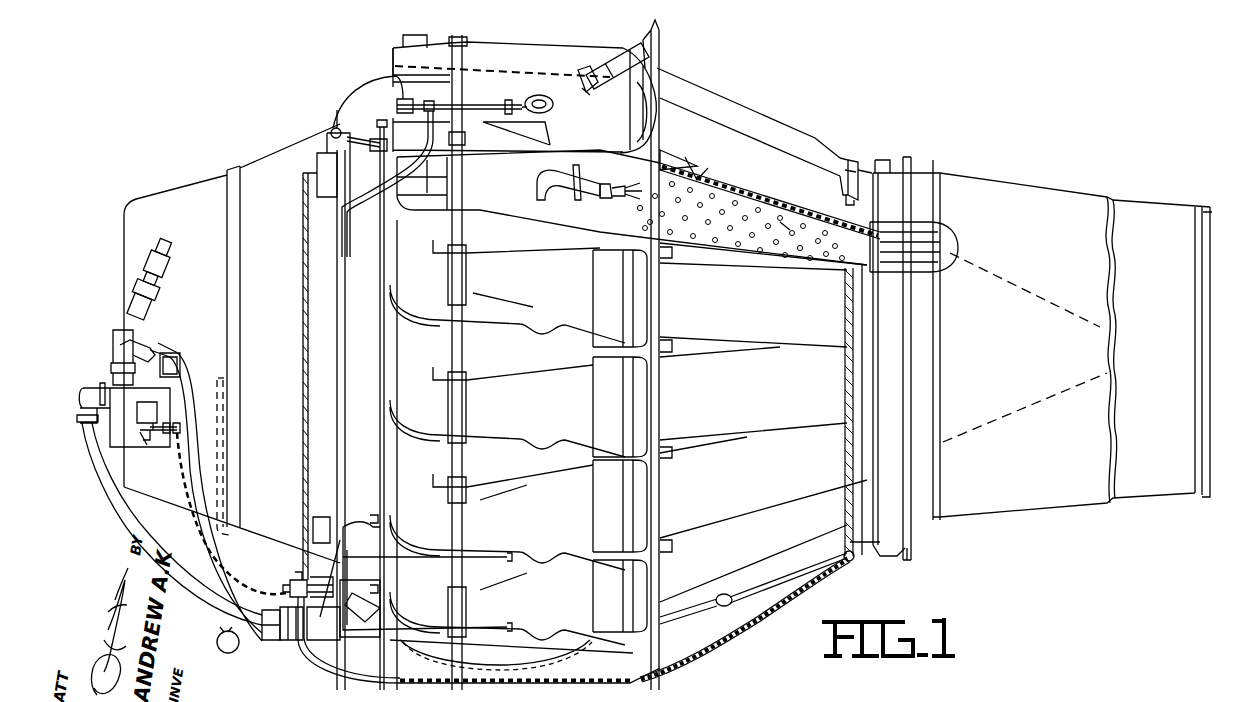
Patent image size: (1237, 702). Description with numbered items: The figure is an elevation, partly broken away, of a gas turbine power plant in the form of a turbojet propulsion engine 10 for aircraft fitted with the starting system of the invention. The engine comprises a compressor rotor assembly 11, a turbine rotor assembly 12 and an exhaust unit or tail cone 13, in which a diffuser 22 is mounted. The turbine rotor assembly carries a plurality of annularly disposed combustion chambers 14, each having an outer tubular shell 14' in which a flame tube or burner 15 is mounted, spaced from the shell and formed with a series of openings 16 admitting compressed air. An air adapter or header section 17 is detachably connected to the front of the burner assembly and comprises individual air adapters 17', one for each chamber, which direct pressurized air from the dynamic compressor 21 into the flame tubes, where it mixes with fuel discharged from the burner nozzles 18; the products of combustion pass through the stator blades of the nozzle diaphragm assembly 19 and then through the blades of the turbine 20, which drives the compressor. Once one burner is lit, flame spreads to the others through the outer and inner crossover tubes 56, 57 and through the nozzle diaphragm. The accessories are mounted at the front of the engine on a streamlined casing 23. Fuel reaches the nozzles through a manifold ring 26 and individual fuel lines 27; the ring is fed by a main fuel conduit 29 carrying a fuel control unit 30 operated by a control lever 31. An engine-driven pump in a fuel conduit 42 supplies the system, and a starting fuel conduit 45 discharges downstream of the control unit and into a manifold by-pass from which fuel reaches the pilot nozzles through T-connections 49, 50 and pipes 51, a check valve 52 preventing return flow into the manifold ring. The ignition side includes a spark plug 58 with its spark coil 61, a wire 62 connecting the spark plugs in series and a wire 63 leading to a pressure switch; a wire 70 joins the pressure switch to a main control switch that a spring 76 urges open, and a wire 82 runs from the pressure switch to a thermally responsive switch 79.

The gas turbine power plant 10 is at (692, 72).
The compressor rotor assembly 11 is at (438, 40).
The turbine rotor assembly 12 is at (826, 131).
The exhaust unit or tail cone 13 is at (1036, 210).
The combustion chambers 14 is at (770, 422).
The outer tubular shell 14' is at (803, 235).
The flame tube or burner 15 is at (746, 209).
The openings 16 is at (741, 221).
The air adapter or header section 17 is at (524, 350).
The air adapters 17' is at (518, 293).
The burner nozzles 18 is at (622, 206).
The nozzle diaphragm assembly 19 is at (895, 268).
The turbine 20 is at (927, 268).
The dynamic compressor 21 is at (448, 178).
The diffuser 22 is at (955, 246).
The streamlined casing 23 is at (160, 207).
The manifold ring 26 is at (381, 345).
The individual fuel lines 27 is at (536, 183).
The main fuel conduit 29 is at (103, 480).
The fuel control unit 30 is at (112, 386).
The control lever 31 is at (145, 437).
The fuel conduit 42 is at (165, 258).
The starting fuel conduit 45 is at (195, 455).
The T-connection 49 is at (340, 258).
The T-connection 50 is at (358, 80).
The pipe or fuel line section 51 is at (486, 105).
The check valve 52 is at (405, 100).
The outer crossover tube 56 is at (676, 358).
The inner crossover tube 57 is at (663, 163).
The spark plug 58 is at (602, 65).
The spark coil 61 is at (330, 512).
The wire 62 is at (302, 310).
The wire 63 is at (290, 542).
The wire 70 is at (280, 575).
The spring 76 is at (180, 428).
The switch 79 is at (843, 177).
The wire 82 is at (755, 616).